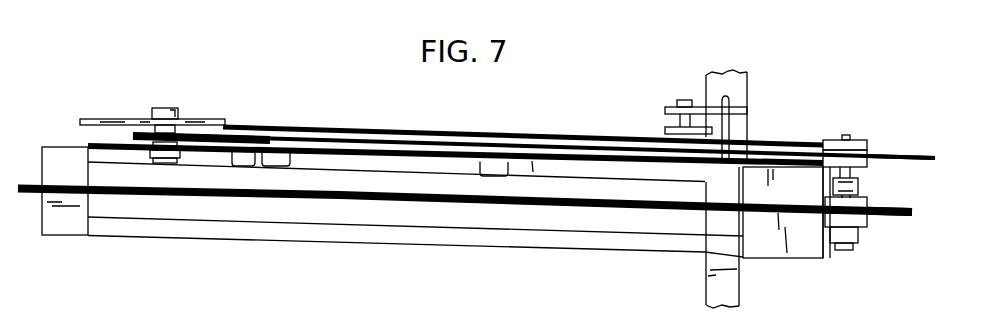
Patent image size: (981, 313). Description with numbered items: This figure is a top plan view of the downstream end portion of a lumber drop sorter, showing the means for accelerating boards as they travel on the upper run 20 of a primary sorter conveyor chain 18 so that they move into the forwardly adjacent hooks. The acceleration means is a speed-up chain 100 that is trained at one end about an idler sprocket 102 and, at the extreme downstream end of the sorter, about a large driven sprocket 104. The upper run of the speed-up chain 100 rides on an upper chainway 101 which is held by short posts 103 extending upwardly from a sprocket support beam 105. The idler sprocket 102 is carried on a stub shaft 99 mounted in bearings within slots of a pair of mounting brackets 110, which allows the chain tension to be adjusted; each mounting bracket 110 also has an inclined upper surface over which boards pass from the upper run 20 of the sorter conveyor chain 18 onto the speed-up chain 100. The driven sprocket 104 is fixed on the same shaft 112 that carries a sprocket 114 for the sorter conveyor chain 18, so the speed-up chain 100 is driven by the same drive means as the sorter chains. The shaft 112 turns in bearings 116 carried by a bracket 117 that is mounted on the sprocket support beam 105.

The sorter conveyor chain 18 is at (508, 204).
The upper run 20 is at (195, 195).
The stub shaft 99 is at (150, 119).
The speed-up chain 100 is at (433, 124).
The upper chainway 101 is at (332, 129).
The idler sprocket 102 is at (133, 135).
The short posts 103 is at (268, 152).
The driven sprocket 104 is at (902, 153).
The sprocket support beam 105 is at (418, 234).
The mounting bracket 110 is at (192, 125).
The shaft 112 is at (845, 135).
The sprocket 114 is at (925, 209).
The bearings 116 is at (858, 187).
The bracket 117 is at (795, 247).